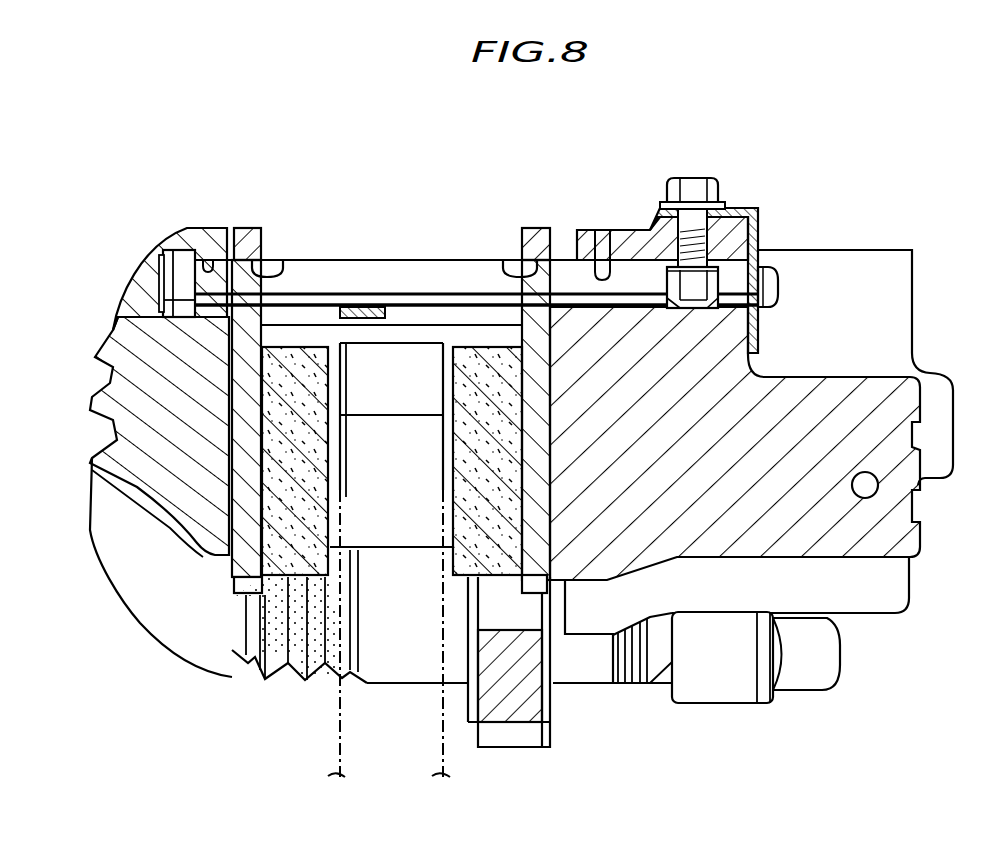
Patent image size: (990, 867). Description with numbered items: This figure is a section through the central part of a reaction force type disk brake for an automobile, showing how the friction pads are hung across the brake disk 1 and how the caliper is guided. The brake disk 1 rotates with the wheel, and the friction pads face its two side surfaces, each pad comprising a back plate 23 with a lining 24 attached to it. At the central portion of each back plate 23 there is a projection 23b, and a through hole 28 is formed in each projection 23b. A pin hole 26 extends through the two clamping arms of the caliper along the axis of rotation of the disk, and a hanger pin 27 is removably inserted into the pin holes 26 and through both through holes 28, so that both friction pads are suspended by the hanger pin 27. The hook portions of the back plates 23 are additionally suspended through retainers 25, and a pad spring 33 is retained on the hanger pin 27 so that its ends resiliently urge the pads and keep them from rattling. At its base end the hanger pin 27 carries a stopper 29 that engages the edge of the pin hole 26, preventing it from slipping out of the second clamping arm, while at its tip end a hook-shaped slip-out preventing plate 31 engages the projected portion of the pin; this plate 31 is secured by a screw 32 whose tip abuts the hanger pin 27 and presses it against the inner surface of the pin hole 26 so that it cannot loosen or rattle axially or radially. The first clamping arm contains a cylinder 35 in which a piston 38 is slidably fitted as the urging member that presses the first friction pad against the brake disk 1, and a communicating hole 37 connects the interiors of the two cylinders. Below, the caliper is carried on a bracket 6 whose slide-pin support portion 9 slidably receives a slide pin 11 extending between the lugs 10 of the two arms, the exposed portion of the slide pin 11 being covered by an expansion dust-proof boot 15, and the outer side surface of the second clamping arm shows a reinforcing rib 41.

The brake disk 1 is at (338, 760).
The bracket 6 is at (519, 726).
The slide-pin support portion 9 is at (402, 672).
The lug 10 is at (721, 688).
The slide pin 11 is at (806, 678).
The expansion dust-proof boot 15 is at (292, 672).
The back plate 23 is at (243, 372).
The projection 23b is at (251, 245).
The lining 24 is at (322, 360).
The retainer 25 is at (432, 335).
The pin hole 26 is at (206, 262).
The hanger pin 27 is at (381, 275).
The through hole 28 is at (283, 262).
The stopper 29 is at (170, 275).
The slip-out preventing plate 31 is at (760, 233).
The screw 32 is at (692, 190).
The pad spring 33 is at (358, 306).
The cylinder 35 is at (877, 609).
The communicating hole 37 is at (870, 490).
The piston 38 is at (560, 458).
The reinforcing rib 41 is at (80, 430).